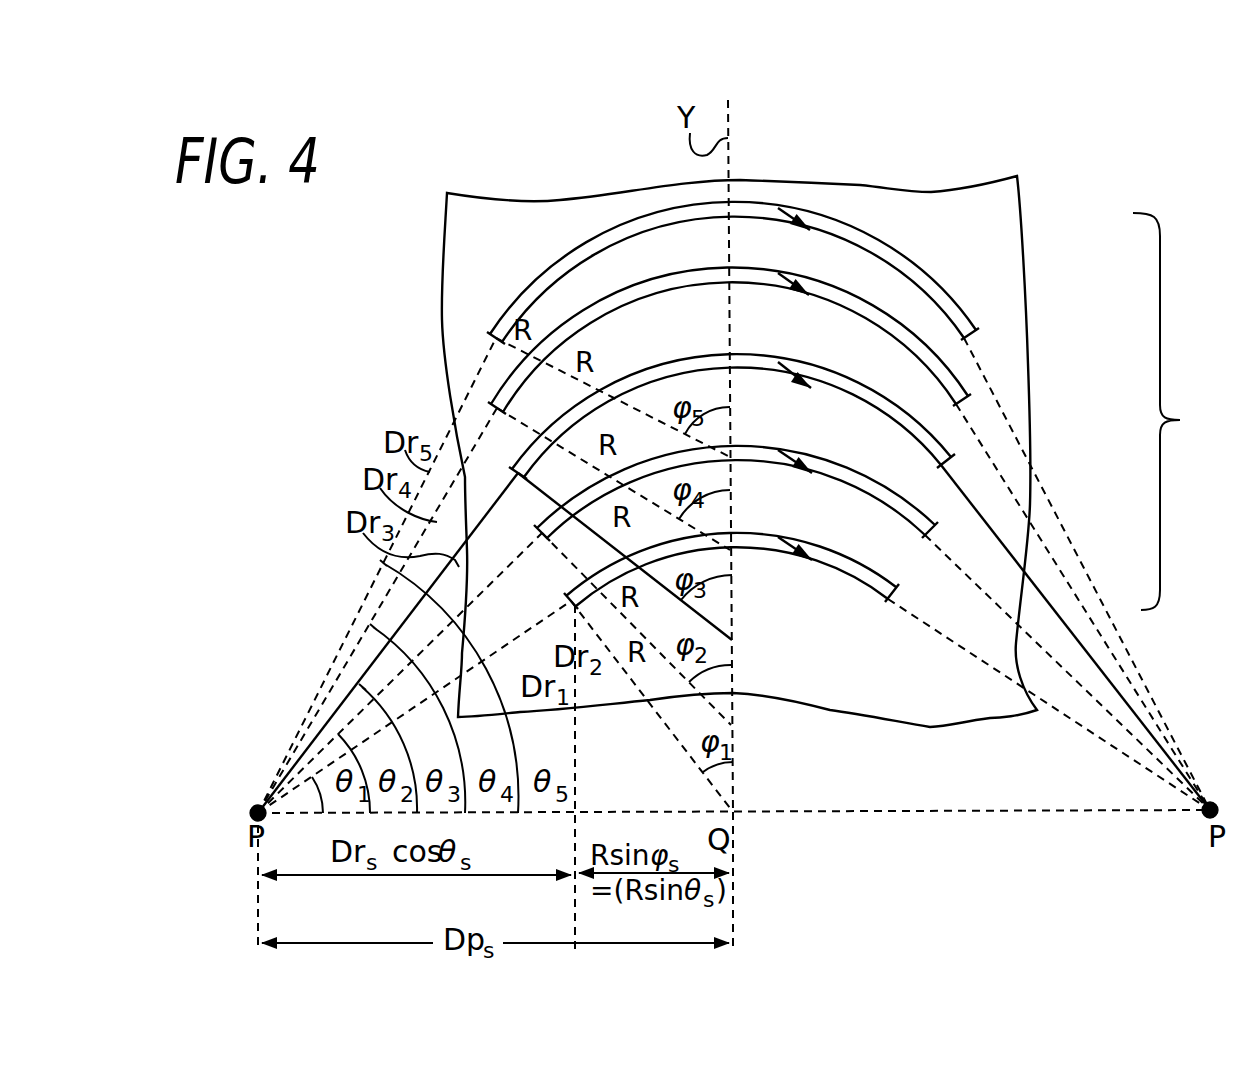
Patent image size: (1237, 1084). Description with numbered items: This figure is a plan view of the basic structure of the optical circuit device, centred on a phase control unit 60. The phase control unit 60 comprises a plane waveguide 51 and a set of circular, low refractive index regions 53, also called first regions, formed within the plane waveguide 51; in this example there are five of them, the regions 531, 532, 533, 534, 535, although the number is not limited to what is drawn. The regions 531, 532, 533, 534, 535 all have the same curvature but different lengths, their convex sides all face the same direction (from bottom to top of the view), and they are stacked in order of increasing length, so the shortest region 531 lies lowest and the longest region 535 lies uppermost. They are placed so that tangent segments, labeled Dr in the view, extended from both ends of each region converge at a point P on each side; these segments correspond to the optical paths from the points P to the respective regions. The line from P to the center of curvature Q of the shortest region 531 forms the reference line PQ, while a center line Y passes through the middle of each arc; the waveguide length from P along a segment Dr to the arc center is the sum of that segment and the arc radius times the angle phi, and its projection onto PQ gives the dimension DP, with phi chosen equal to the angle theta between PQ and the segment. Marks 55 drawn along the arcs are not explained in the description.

The plane waveguide 51 is at (993, 225).
The circular, low refractive index regions 53 is at (818, 405).
The circular, low refractive index region 531 is at (897, 585).
The circular, low refractive index region 532 is at (935, 522).
The circular, low refractive index region 533 is at (950, 455).
The circular, low refractive index region 534 is at (968, 392).
The circular, low refractive index region 535 is at (976, 326).
The direction arrows of the strips 55 is at (839, 877).
The phase control unit 60 is at (1176, 411).